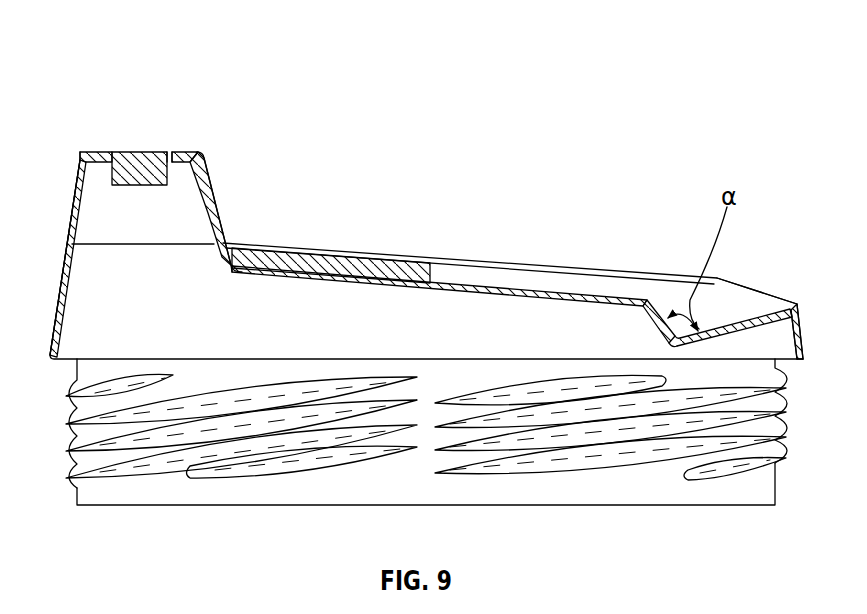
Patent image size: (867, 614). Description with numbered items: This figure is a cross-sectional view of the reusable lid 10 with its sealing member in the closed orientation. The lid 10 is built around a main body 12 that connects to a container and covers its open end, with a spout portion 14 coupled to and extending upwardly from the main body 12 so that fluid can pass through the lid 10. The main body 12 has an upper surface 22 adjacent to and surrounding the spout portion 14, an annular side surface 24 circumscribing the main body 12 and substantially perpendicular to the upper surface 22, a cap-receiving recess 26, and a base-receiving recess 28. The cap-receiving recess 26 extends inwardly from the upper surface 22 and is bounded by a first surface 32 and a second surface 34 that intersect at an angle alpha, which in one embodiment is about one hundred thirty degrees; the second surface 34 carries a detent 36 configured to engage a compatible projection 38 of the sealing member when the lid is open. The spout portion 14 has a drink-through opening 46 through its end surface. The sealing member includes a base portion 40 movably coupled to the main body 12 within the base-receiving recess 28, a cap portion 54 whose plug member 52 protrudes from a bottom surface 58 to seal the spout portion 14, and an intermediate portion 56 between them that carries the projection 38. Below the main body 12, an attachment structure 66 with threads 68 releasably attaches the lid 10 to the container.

The lid 10 is at (106, 46).
The main body 12 is at (456, 302).
The spout portion 14 is at (77, 195).
The upper surface 22 is at (583, 264).
The side surface 24 is at (62, 275).
The cap-receiving recess 26 is at (762, 306).
The base-receiving recess 28 is at (518, 281).
The first surface 32 is at (722, 326).
The second surface 34 is at (666, 338).
The detent 36 is at (661, 304).
The projection 38 is at (213, 183).
The base portion 40 is at (343, 265).
The drink-through opening 46 is at (171, 151).
The plug member 52 is at (132, 153).
The cap portion 54 is at (108, 158).
The intermediate portion 56 is at (217, 212).
The bottom surface 58 is at (181, 163).
The attachment structure 66 is at (78, 494).
The threads 68 is at (73, 452).